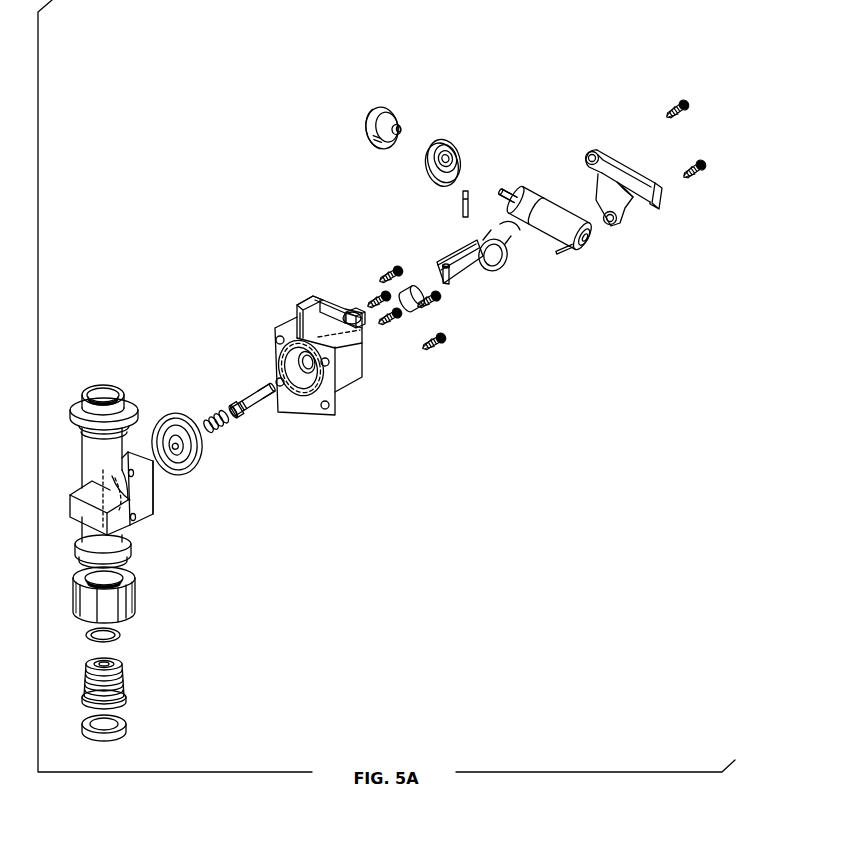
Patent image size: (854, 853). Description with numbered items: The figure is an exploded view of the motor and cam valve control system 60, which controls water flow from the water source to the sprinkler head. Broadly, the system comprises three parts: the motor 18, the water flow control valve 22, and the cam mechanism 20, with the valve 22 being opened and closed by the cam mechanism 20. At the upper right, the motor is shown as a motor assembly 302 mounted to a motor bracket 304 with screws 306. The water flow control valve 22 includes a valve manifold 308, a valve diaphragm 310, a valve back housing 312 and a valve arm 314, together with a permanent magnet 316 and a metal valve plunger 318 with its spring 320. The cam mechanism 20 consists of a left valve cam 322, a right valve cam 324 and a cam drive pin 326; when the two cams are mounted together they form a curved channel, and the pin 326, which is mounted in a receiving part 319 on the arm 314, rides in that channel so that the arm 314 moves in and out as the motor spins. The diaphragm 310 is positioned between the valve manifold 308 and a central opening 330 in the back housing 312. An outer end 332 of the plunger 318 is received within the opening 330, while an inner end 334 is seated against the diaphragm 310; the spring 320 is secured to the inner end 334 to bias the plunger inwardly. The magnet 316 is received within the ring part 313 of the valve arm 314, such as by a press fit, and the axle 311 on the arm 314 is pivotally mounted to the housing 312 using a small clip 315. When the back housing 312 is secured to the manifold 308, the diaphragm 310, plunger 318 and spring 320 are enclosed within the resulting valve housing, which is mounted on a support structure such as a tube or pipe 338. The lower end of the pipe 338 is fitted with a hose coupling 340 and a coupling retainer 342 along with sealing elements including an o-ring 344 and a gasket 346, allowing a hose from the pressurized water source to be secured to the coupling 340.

The motor 18 is at (679, 268).
The cam mechanism 20 is at (468, 79).
The water flow control valve 22 is at (303, 517).
The motor and cam valve control system 60 is at (131, 305).
The motor assembly 302 is at (586, 258).
The motor bracket 304 is at (598, 147).
The screws 306 is at (690, 165).
The valve manifold 308 is at (158, 505).
The valve diaphragm 310 is at (205, 465).
The axle 311 is at (450, 283).
The valve back housing 312 is at (337, 417).
The ring part 313 is at (487, 262).
The valve arm 314 is at (512, 262).
The small clip 315 is at (365, 327).
The permanent magnet 316 is at (420, 283).
The metal valve plunger 318 is at (247, 395).
The receiving part 319 is at (450, 236).
The spring 320 is at (196, 428).
The left valve cam 322 is at (447, 140).
The right valve cam 324 is at (366, 114).
The cam drive pin 326 is at (466, 190).
The central opening 330 is at (288, 397).
The outer end 332 is at (270, 378).
The inner end 334 is at (237, 425).
The pipe 338 is at (90, 453).
The hose coupling 340 is at (135, 590).
The coupling retainer 342 is at (127, 707).
The o-ring 344 is at (123, 632).
The gasket 346 is at (127, 742).